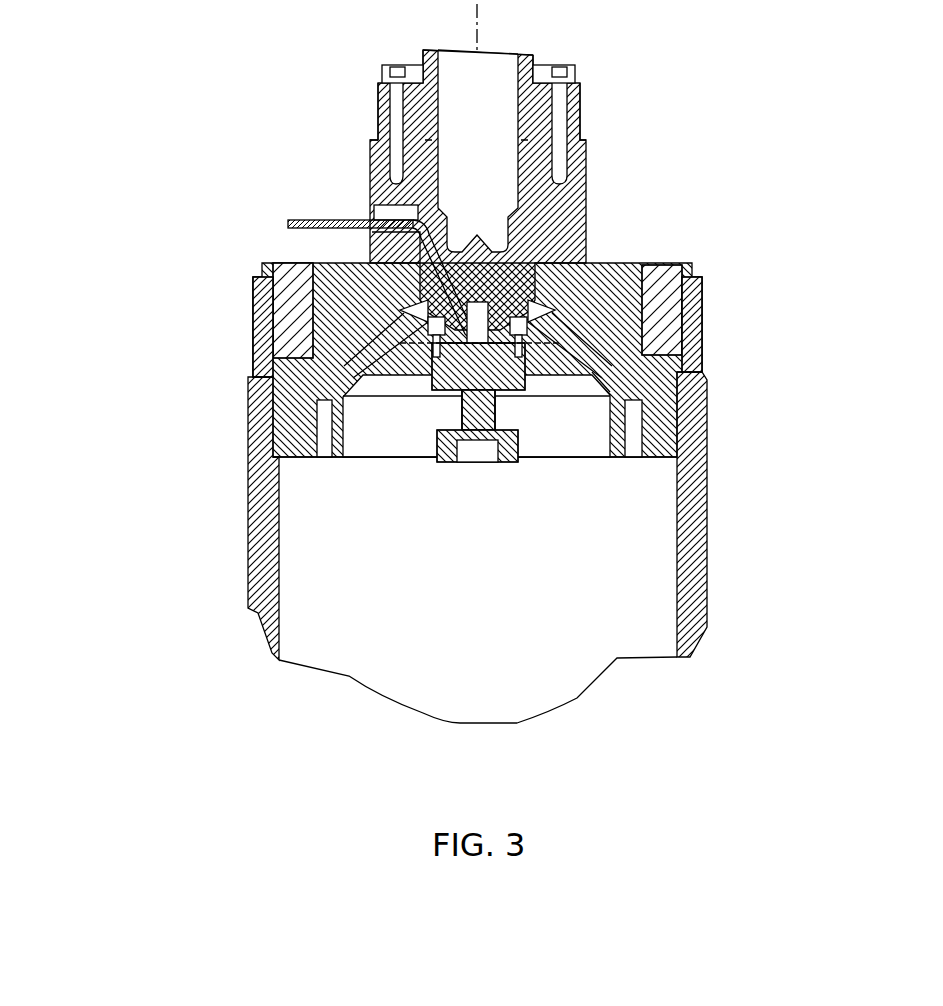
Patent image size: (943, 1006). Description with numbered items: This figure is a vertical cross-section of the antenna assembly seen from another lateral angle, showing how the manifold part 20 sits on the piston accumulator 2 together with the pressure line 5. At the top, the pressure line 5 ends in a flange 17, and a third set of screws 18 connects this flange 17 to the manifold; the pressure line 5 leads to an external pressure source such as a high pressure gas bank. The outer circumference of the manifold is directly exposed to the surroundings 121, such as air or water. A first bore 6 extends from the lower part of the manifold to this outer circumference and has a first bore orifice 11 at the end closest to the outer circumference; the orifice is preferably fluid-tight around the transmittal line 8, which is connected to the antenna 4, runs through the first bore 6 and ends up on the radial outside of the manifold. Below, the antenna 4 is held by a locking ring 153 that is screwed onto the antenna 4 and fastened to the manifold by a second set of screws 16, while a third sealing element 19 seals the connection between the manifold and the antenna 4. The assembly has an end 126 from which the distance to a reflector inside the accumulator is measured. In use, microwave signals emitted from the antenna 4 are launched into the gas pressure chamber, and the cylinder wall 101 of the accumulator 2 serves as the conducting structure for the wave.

The piston accumulator 2 is at (198, 517).
The antenna 4 is at (497, 413).
The pressure line 5 is at (422, 48).
The first bore 6 is at (415, 250).
The transmittal line 8 is at (300, 219).
The first bore orifice 11 is at (372, 205).
The second set of screws 16 is at (537, 307).
The flange 17 is at (578, 118).
The third set of screws 18 is at (572, 64).
The third sealing element 19 is at (530, 344).
The housing part 20 is at (198, 248).
The cylinder wall 101 is at (250, 552).
The surroundings 121 is at (820, 165).
The end of the assembly 126 is at (505, 462).
The locking ring 153 is at (592, 372).